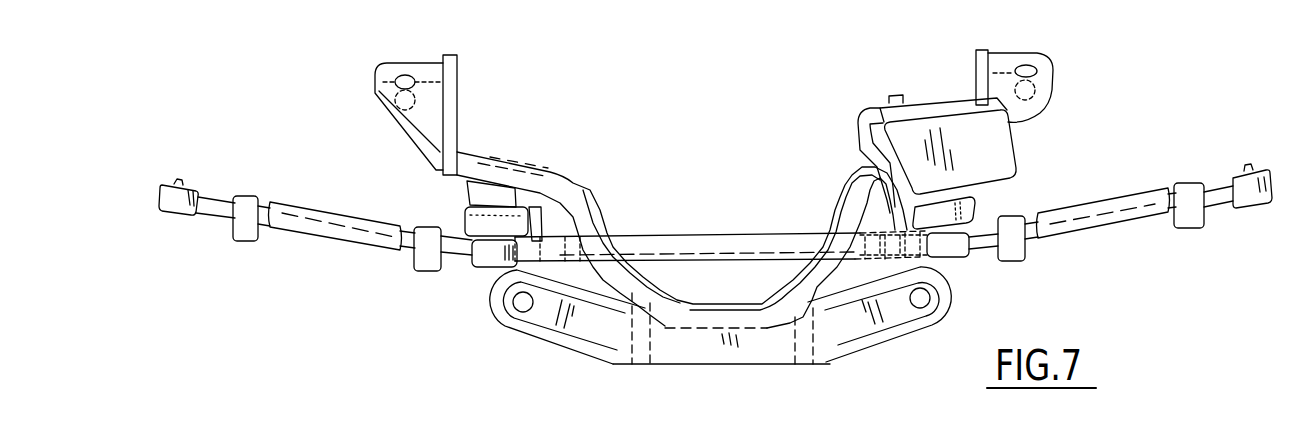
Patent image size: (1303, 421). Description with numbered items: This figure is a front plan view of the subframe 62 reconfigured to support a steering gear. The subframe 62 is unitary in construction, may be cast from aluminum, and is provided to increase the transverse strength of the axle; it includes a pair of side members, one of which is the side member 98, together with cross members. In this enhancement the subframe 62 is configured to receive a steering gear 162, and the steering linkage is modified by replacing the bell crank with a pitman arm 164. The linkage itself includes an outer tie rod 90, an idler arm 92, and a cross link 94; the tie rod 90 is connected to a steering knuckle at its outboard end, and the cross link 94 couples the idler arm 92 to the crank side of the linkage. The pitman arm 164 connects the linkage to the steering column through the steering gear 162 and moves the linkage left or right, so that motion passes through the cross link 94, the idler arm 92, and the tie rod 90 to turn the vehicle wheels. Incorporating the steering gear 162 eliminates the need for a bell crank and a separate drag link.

The subframe 62 is at (746, 380).
The outer tie rod 90 is at (1100, 218).
The idler arm 92 is at (466, 213).
The cross link 94 is at (723, 243).
The side member 98 is at (350, 237).
The steering gear 162 is at (993, 150).
The pitman arm 164 is at (975, 205).